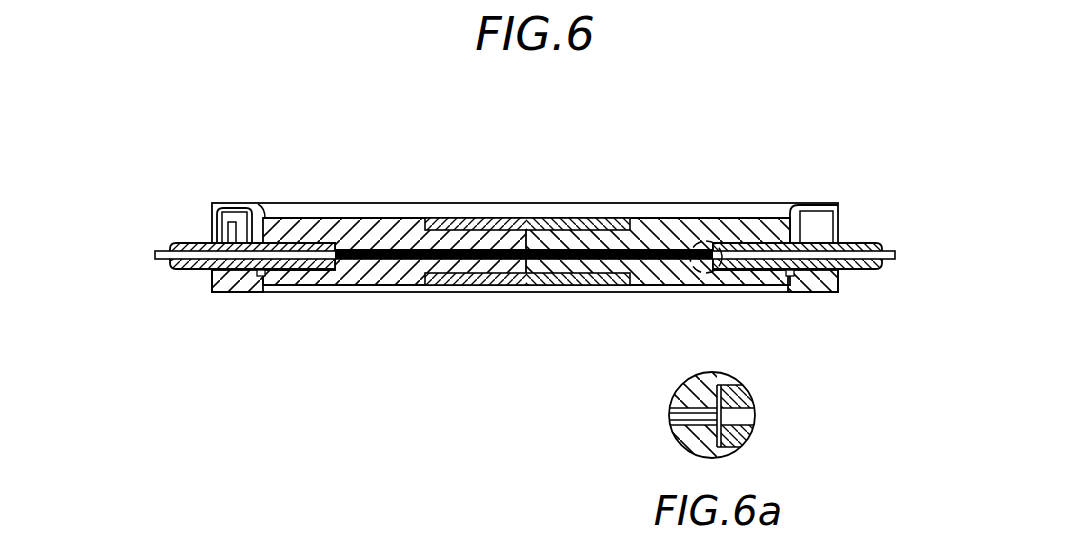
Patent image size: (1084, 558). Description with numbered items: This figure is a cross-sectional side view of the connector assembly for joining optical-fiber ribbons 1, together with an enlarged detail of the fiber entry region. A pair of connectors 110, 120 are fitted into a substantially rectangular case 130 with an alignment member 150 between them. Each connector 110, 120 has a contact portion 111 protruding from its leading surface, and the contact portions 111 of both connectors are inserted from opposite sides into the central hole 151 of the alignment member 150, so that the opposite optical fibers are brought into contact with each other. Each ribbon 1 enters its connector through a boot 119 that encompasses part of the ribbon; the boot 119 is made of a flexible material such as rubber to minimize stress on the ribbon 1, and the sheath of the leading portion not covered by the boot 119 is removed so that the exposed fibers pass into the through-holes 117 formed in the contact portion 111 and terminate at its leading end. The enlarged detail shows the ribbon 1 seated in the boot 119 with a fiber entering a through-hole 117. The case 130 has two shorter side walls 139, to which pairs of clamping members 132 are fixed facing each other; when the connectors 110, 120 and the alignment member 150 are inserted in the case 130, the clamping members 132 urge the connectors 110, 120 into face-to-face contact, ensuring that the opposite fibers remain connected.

In FIG. 6, the optical-fiber ribbon 1 is at (162, 250).
In FIG. 6A, the optical-fiber ribbon 1 is at (748, 416).
In FIG. 6, the connector 110 is at (368, 212).
In FIG. 6, the contact portion 111 is at (570, 268).
In FIG. 6A, the through-hole 117 is at (680, 430).
In FIG. 6, the boot 119 is at (203, 270).
In FIG. 6A, the boot 119 is at (755, 436).
In FIG. 6, the connector 120 is at (687, 214).
In FIG. 6, the case 130 is at (826, 196).
In FIG. 6, the clamping member 132 is at (262, 208).
In FIG. 6, the shorter side wall 139 is at (233, 274).
In FIG. 6, the alignment member 150 is at (574, 210).
In FIG. 6, the central hole 151 is at (488, 236).